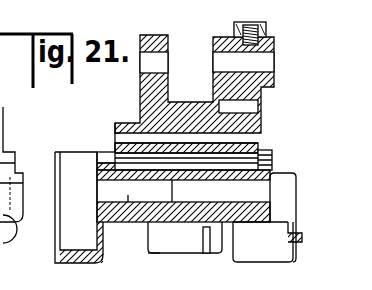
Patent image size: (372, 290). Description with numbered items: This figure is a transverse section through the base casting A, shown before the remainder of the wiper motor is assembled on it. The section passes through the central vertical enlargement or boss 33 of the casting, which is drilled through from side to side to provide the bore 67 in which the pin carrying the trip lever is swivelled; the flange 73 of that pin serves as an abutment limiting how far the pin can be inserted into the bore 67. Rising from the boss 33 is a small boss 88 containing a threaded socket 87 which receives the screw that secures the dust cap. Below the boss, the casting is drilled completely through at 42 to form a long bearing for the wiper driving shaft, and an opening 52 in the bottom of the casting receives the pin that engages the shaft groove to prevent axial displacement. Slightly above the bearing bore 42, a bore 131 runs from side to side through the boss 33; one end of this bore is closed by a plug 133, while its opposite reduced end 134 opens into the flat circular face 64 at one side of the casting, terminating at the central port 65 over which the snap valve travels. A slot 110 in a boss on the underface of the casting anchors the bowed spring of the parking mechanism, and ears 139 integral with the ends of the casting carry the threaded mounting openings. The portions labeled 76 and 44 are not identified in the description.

The boss 33 is at (274, 85).
The base casting A is at (131, 89).
The threaded socket 87 is at (266, 28).
The small boss 88 is at (234, 26).
The flange 76 is at (116, 124).
The bore 67 is at (112, 138).
The flange 73 is at (113, 142).
The central port 65 is at (97, 169).
The bore 131 is at (203, 160).
The plug 133 is at (273, 162).
The opening 52 is at (172, 190).
The bearing bore 42 is at (128, 198).
The flat circular face 64 is at (97, 214).
The reduced end of bore 134 is at (97, 185).
The slot 110 is at (202, 243).
The base 44 is at (163, 247).
The ears 139 is at (265, 250).